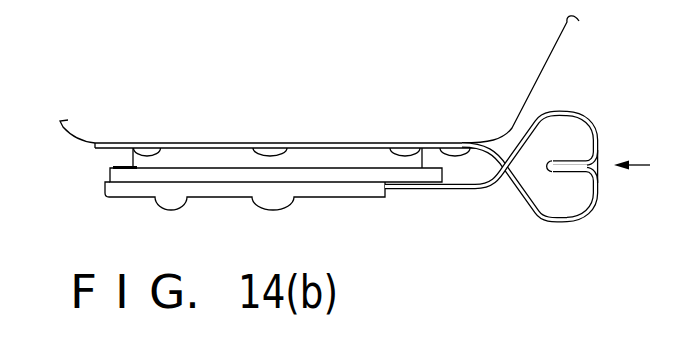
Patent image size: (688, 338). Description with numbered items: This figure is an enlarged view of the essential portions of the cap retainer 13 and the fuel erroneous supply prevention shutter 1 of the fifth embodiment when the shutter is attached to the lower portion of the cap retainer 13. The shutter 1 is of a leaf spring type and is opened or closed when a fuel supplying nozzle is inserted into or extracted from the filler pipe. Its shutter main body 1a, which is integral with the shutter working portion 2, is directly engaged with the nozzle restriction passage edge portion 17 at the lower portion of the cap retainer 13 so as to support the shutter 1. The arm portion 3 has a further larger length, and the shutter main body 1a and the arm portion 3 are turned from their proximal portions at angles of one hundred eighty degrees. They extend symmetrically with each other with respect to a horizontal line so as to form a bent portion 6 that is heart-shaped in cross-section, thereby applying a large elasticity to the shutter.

The fuel erroneous supply prevention shutter 1 is at (508, 191).
The shutter main body 1a is at (583, 212).
The arm portion 3 is at (583, 116).
The shutter working portion 2 is at (433, 184).
The cap retainer 13 is at (563, 40).
The nozzle restriction passage edge portion 17 is at (110, 168).
The bent portion 6 is at (649, 163).